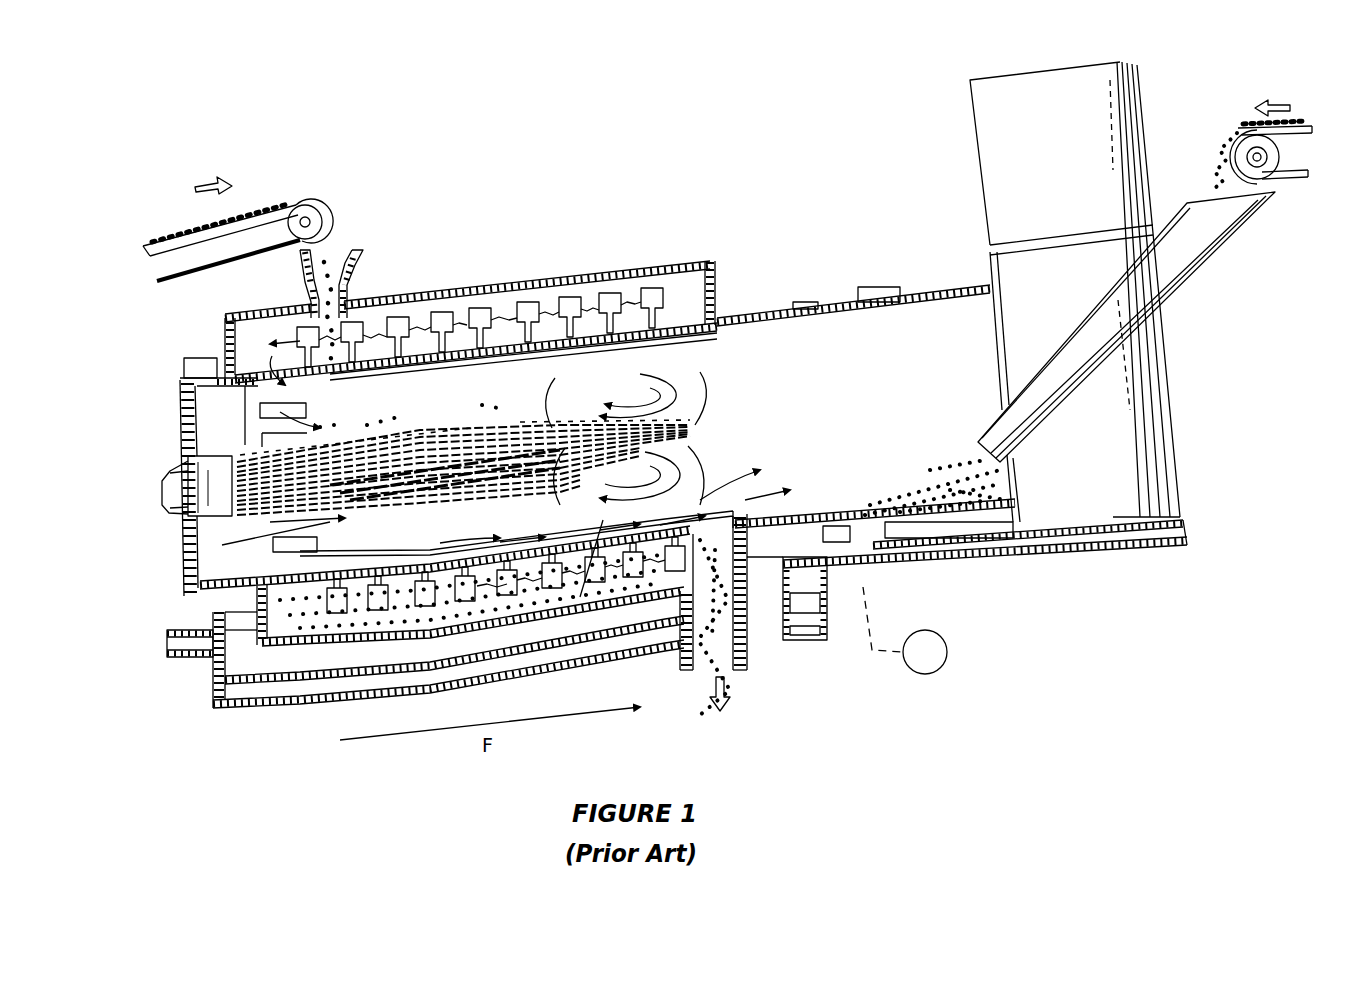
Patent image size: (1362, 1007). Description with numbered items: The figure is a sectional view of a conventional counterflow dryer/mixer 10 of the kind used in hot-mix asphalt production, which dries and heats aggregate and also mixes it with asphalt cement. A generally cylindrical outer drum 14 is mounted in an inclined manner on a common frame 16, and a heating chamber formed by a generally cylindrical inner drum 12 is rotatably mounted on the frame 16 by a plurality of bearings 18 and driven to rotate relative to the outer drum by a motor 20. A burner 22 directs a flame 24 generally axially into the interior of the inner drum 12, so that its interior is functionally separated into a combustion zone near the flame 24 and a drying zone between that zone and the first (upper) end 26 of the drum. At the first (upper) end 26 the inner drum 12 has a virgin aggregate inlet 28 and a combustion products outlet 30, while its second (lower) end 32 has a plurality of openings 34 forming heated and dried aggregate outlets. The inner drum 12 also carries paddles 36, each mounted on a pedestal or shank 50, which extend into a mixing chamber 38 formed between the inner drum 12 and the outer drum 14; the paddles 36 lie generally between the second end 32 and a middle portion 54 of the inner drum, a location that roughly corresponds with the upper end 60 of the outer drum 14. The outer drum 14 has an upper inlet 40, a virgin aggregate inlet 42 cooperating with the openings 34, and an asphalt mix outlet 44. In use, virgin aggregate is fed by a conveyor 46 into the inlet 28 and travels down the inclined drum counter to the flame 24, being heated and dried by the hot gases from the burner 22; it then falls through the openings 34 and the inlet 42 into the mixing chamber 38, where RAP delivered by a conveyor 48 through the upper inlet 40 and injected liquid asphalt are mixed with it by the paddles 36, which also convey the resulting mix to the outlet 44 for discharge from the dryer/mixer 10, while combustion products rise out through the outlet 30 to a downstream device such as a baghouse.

The counterflow dryer/mixer 10 is at (747, 186).
The inner drum 12 is at (776, 306).
The outer drum 14 is at (646, 273).
The frame 16 is at (213, 689).
The bearings 18 is at (167, 641).
The motor 20 is at (936, 633).
The burner 22 is at (176, 488).
The flame 24 is at (462, 425).
The first (upper) end 26 is at (1018, 484).
The virgin aggregate inlet 28 is at (997, 437).
The combustion products outlet 30 is at (1052, 78).
The second (lower) end 32 is at (180, 395).
The openings 34 is at (272, 521).
The paddles 36 is at (428, 608).
The mixing chamber 38 is at (470, 603).
The upper inlet 40 is at (360, 270).
The virgin aggregate inlet 42 is at (237, 613).
The asphalt mix outlet 44 is at (749, 669).
The conveyor 46 is at (1311, 126).
The conveyor 48 is at (160, 234).
The shanks 50 is at (377, 586).
The middle portion 54 is at (718, 302).
The upper end 60 is at (713, 263).